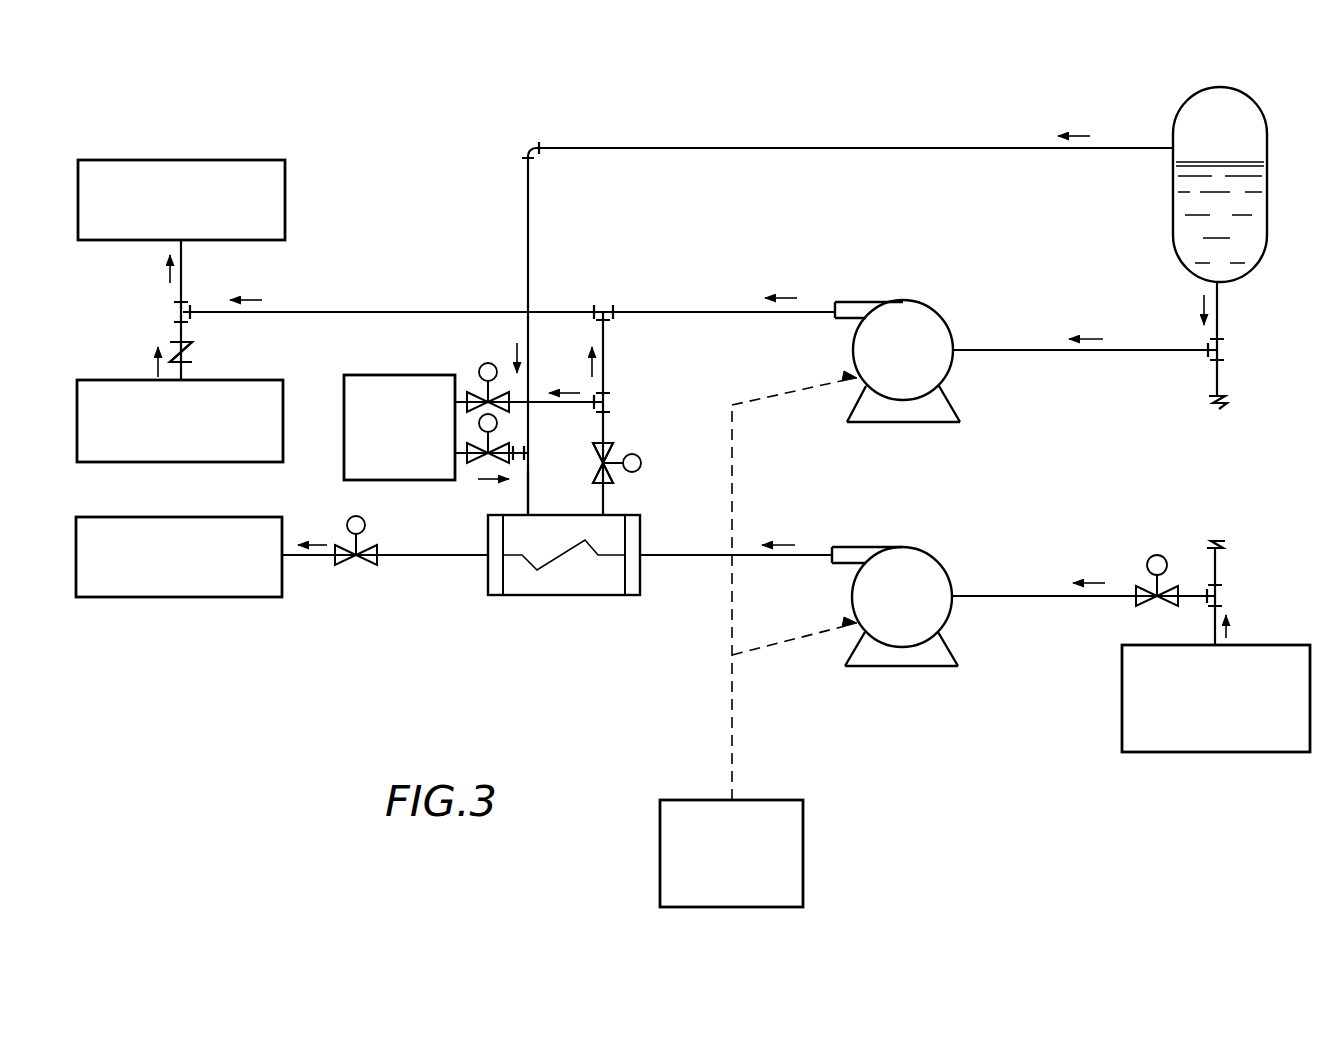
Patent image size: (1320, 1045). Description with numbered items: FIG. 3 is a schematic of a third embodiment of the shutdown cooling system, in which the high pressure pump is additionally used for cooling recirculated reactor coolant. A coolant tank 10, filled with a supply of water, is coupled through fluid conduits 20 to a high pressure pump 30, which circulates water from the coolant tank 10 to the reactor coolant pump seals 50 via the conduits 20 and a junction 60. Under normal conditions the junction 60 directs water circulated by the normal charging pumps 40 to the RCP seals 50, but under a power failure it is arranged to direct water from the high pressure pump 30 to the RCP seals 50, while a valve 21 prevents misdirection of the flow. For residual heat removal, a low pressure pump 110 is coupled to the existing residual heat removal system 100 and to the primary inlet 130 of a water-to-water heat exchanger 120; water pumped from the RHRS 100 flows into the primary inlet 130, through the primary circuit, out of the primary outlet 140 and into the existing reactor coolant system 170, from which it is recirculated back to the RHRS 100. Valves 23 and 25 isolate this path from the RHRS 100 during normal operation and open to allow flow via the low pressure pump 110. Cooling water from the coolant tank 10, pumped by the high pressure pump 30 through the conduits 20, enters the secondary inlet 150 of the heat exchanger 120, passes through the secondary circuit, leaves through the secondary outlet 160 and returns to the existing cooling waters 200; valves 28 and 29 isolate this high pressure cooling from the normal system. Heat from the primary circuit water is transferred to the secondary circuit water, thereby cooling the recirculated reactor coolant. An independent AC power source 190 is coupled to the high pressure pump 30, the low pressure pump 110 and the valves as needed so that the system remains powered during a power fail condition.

The coolant tank 10 is at (1185, 103).
The fluid conduits 20 is at (992, 148).
The valve 21 is at (192, 352).
The valve 23 is at (338, 565).
The valve 25 is at (1137, 602).
The valve 28 is at (478, 395).
The valve 29 is at (477, 460).
The high pressure pump 30 is at (910, 302).
The normal charging pumps 40 is at (77, 428).
The reactor coolant pump seals 50 is at (287, 208).
The junction 60 is at (156, 311).
The existing residual heat removal system 100 is at (1272, 645).
The low pressure pump 110 is at (917, 547).
The heat exchanger 120 is at (470, 602).
The primary inlet 130 is at (646, 542).
The primary outlet 140 is at (474, 541).
The secondary inlet 150 is at (539, 509).
The secondary outlet 160 is at (614, 508).
The existing reactor coolant system 170 is at (160, 598).
The independent power source 190 is at (803, 878).
The existing cooling waters 200 is at (410, 375).